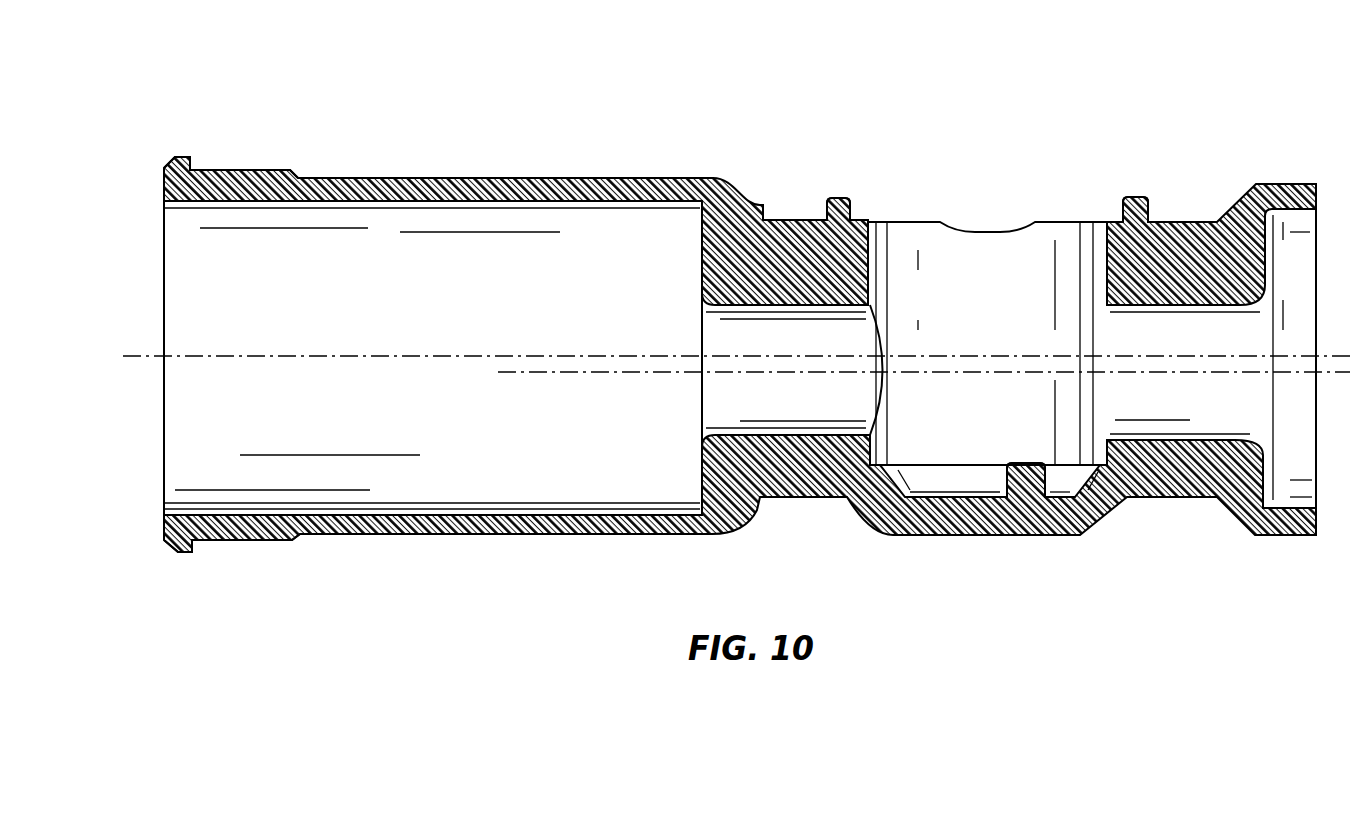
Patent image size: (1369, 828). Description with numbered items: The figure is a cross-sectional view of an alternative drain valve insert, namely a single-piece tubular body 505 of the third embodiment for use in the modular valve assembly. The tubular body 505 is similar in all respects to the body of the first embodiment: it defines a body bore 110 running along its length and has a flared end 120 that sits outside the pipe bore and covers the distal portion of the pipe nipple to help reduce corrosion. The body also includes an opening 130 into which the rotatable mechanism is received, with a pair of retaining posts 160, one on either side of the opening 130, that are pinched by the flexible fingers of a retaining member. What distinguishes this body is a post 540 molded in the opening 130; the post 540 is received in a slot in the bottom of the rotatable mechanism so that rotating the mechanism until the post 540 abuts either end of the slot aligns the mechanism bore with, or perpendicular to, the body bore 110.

The tubular body 505 is at (487, 130).
The flared end 120 is at (172, 162).
The body bore 110 is at (392, 243).
The retaining posts 160 is at (840, 198).
The opening 130 is at (870, 265).
The post 540 is at (1027, 450).